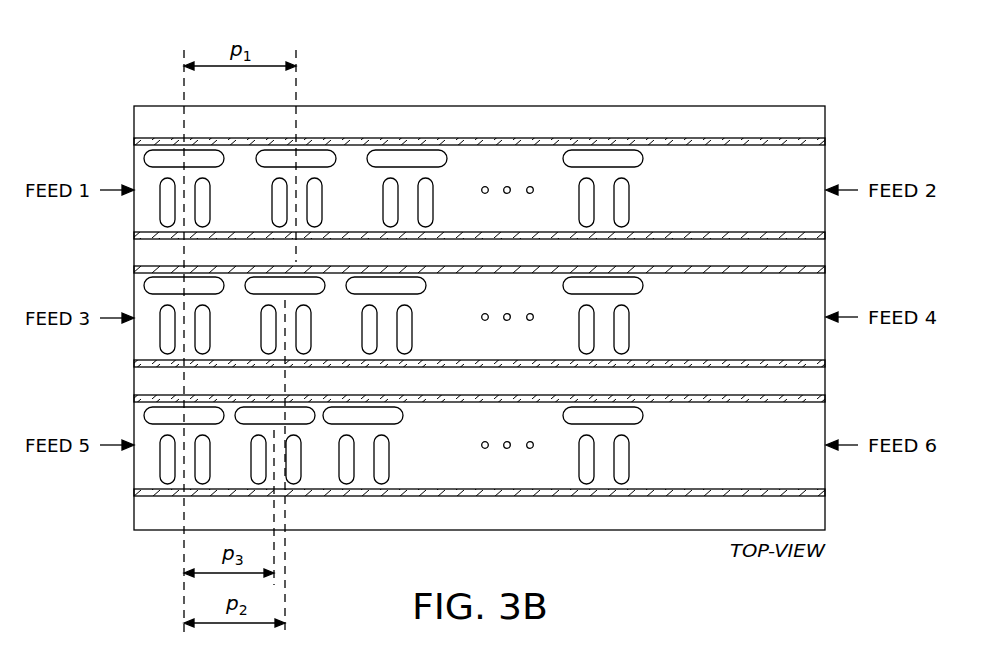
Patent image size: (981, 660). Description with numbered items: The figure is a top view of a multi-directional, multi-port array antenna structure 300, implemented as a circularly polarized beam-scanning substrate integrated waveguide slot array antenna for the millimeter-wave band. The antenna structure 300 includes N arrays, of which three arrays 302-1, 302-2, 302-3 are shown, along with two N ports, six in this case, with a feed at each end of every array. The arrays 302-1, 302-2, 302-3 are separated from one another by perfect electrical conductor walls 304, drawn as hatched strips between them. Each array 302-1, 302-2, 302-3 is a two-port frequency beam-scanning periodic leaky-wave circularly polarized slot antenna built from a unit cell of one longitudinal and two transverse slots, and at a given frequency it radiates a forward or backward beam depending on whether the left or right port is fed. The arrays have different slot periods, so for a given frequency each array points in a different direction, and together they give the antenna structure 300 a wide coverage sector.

The multi-directional, multi-port array antenna structure 300 is at (662, 101).
The array 302-1 is at (817, 160).
The array 302-2 is at (817, 292).
The array 302-3 is at (817, 470).
The perfect electrical conductor (PEC) walls 304 is at (134, 237).